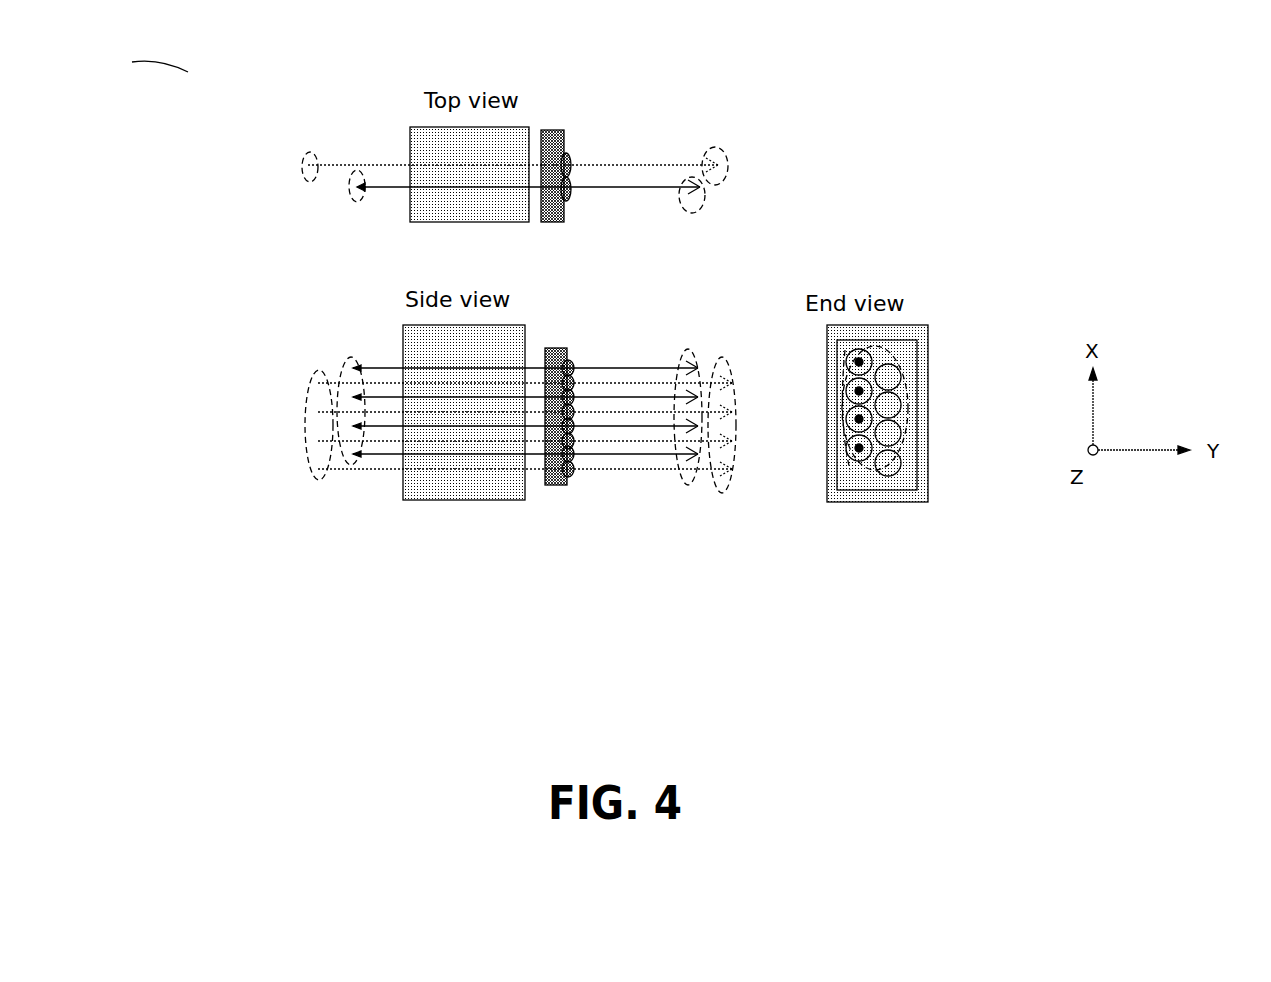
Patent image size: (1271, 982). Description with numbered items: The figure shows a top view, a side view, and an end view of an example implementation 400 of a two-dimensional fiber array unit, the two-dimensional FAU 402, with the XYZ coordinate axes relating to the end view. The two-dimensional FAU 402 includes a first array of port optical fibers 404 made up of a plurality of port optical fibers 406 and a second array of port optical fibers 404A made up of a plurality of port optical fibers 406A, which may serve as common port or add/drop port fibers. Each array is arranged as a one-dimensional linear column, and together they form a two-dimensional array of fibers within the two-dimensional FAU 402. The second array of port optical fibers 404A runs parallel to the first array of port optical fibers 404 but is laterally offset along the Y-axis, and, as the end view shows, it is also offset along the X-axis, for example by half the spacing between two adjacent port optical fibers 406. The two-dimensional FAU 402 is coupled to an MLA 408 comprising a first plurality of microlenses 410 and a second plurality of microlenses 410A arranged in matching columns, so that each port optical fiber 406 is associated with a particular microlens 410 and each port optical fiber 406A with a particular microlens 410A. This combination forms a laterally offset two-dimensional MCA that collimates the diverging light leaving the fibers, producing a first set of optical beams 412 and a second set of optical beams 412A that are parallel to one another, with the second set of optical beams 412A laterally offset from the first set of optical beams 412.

The example implementation 400 is at (176, 64).
The two-dimensional FAU 402 is at (432, 505).
The first array of port optical fibers 404 is at (350, 185).
The second array of port optical fibers 404A is at (308, 160).
The port optical fiber 406 is at (390, 470).
The port optical fiber 406A is at (340, 478).
The MLA 408 is at (550, 490).
The first plurality of microlenses 410 is at (575, 465).
The second plurality of microlenses 410A is at (572, 478).
The first set of optical beams 412 is at (690, 212).
The second set of optical beams 412A is at (718, 148).